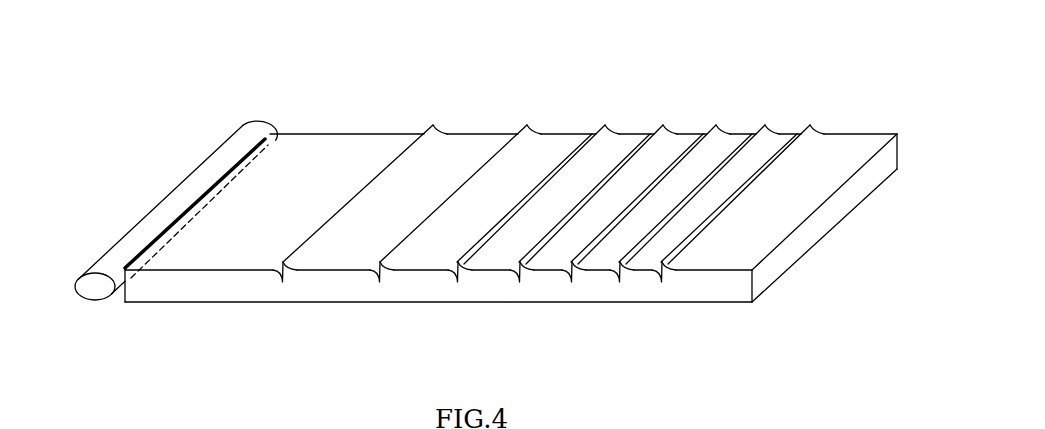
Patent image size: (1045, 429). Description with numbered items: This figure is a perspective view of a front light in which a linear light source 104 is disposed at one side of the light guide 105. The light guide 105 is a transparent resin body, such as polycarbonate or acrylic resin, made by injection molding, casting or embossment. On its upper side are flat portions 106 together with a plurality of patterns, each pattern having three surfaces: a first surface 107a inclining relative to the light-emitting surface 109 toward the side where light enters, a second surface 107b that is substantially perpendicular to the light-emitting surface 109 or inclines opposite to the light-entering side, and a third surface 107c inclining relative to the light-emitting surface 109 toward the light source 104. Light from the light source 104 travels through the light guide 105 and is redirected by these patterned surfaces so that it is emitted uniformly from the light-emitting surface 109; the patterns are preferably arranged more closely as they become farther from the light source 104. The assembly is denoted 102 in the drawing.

The light guide plate 102 is at (364, 404).
The light source 104 is at (207, 178).
The light guide 105 is at (775, 262).
The flat portions 106 is at (315, 147).
The first surface 107a is at (281, 283).
The second surface 107b is at (288, 272).
The third surface 107c is at (290, 263).
The light-emitting surface 109 is at (632, 303).